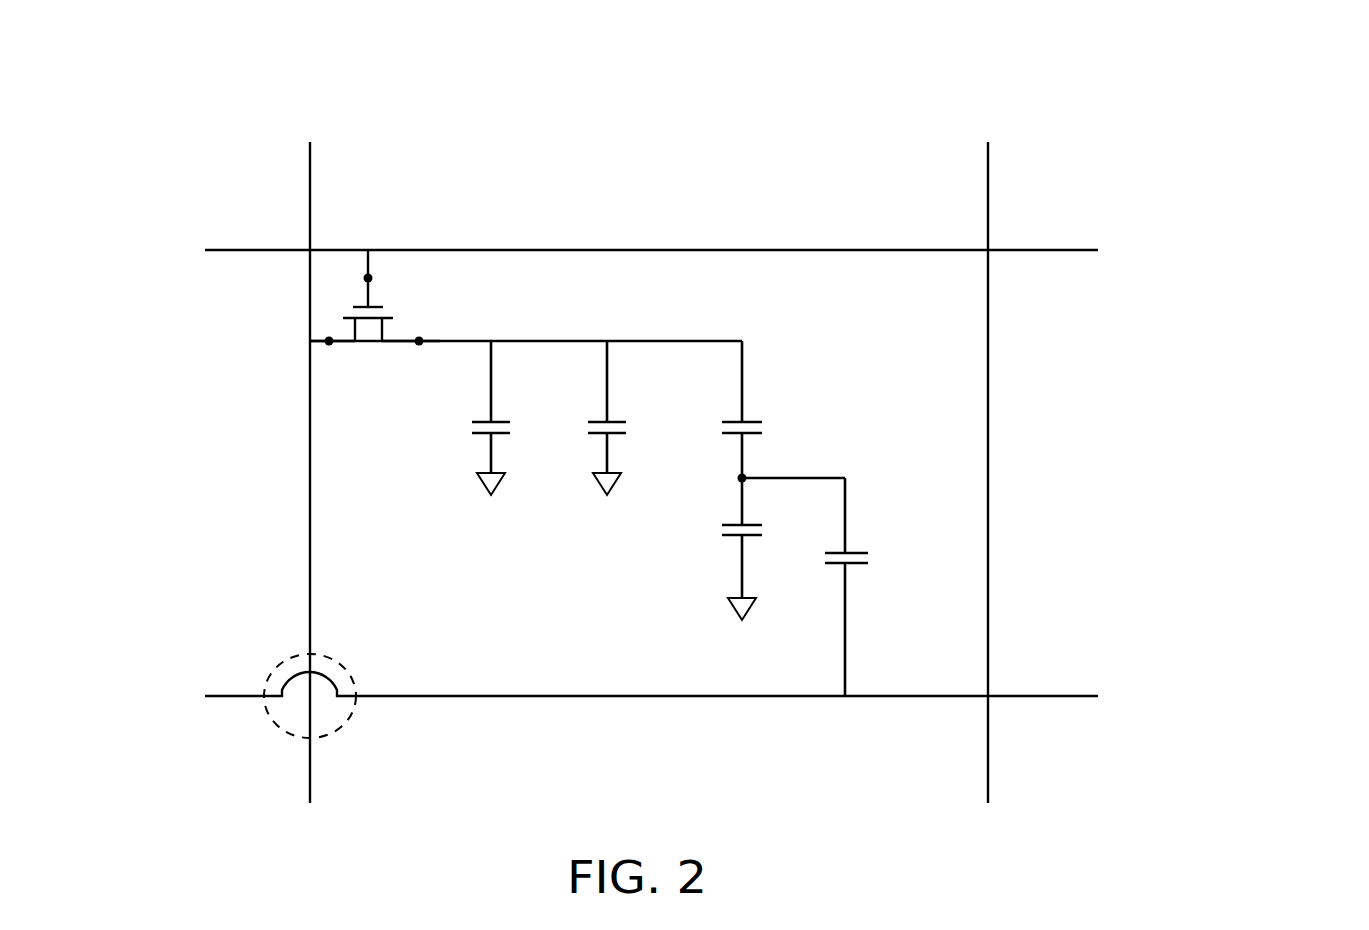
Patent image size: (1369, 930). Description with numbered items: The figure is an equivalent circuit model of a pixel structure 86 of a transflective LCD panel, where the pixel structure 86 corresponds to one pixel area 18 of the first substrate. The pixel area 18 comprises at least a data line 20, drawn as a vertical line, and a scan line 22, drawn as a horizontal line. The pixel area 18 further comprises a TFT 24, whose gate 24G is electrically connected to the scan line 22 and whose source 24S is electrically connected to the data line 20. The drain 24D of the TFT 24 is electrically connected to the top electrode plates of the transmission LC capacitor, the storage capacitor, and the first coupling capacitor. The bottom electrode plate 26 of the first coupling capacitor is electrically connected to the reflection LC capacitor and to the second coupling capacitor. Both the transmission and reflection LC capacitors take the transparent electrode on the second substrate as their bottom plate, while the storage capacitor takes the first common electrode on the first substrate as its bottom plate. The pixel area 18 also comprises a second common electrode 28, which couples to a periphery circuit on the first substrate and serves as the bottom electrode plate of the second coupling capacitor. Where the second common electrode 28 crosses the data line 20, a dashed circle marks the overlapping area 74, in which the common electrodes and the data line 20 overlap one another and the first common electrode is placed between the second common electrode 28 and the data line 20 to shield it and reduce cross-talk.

The pixel area 18 is at (749, 483).
The data line 20 is at (310, 200).
The scan line 22 is at (248, 251).
The TFT 24 is at (526, 267).
The gate 24G is at (396, 278).
The source 24S is at (338, 358).
The drain 24D is at (414, 358).
The bottom electrode plate 26 is at (792, 464).
The second common electrode 28 is at (247, 696).
The overlapping area 74 is at (342, 725).
The pixel structure 86 is at (1223, 137).